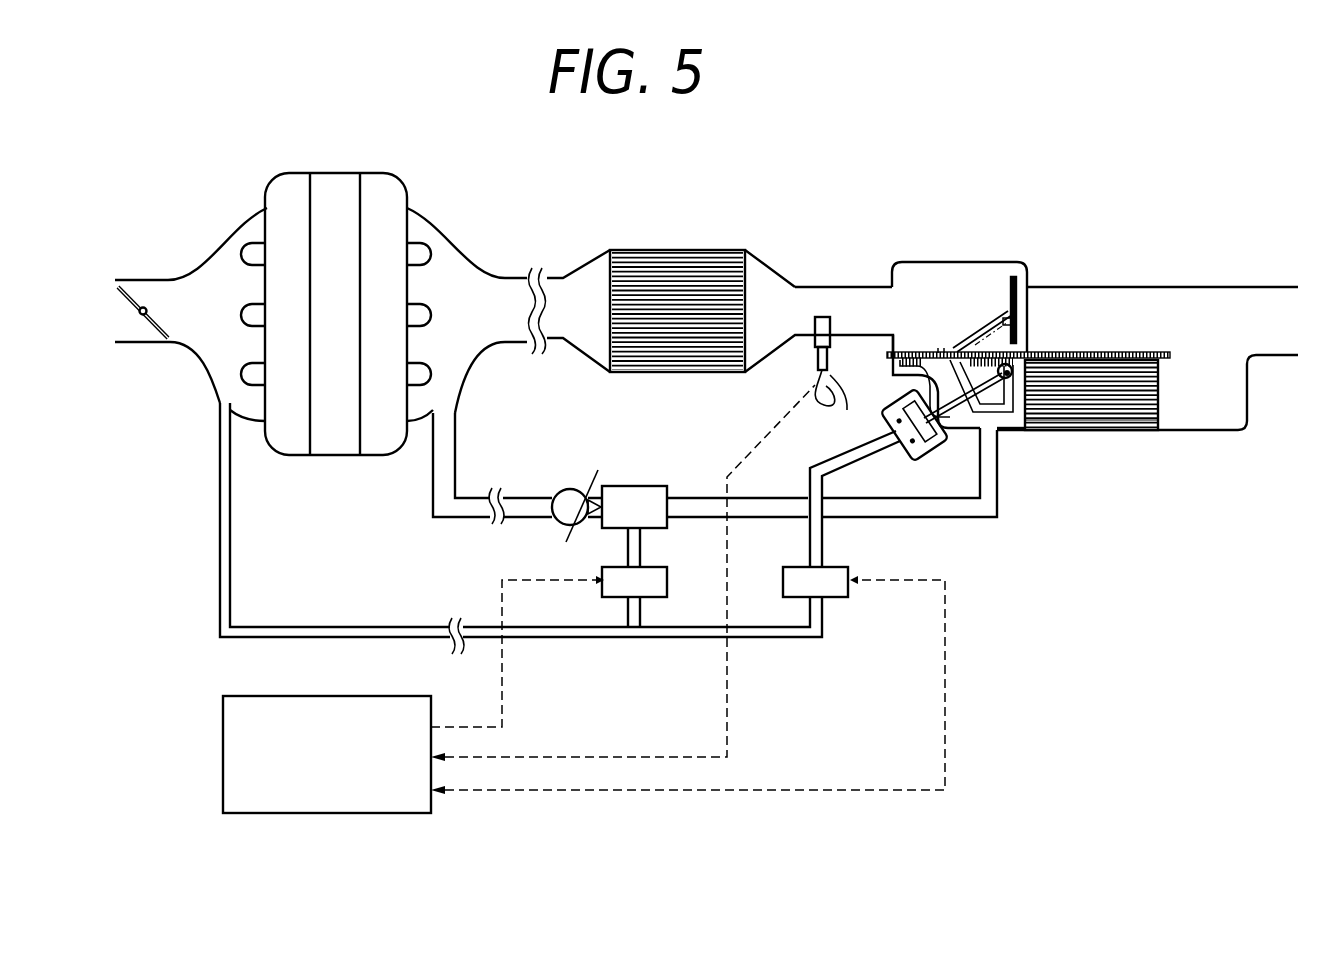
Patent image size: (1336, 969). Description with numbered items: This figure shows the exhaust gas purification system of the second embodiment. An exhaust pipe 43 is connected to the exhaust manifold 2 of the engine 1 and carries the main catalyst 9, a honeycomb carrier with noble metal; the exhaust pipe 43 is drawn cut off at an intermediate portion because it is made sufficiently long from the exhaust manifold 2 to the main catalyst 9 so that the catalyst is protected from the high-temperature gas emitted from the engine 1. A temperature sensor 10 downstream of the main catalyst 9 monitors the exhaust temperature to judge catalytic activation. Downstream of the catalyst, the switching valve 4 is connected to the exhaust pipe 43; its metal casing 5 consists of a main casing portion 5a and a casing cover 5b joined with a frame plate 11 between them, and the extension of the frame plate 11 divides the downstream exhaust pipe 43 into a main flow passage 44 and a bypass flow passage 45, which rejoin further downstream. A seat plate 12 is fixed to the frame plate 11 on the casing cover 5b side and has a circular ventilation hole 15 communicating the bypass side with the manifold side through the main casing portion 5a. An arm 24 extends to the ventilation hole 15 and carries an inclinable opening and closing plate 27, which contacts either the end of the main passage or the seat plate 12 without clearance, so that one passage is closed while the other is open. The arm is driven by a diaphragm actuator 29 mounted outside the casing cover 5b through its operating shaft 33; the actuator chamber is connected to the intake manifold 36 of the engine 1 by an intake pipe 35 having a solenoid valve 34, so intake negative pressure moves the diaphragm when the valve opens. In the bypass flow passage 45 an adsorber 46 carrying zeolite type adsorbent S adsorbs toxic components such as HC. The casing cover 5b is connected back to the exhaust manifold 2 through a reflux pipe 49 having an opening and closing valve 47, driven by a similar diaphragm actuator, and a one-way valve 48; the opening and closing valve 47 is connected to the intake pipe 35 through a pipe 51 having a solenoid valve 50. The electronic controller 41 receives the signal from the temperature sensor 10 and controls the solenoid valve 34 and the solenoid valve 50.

The engine 1 is at (345, 172).
The exhaust manifold 2 is at (478, 236).
The switching valve 4 is at (1033, 258).
The casing 5 is at (993, 254).
The main casing portion 5a is at (915, 260).
The casing cover 5b is at (959, 420).
The main catalyst 9 is at (710, 262).
The temperature sensor 10 is at (812, 325).
The frame plate 11 is at (1050, 352).
The seat plate 12 is at (895, 378).
The ventilation hole 15 is at (890, 352).
The arm 24 is at (985, 330).
The opening and closing plate 27 is at (1003, 296).
The diaphragm actuator 29 is at (918, 478).
The operating shaft 33 is at (1000, 458).
The solenoid valve 34 is at (850, 600).
The intake pipe 35 is at (690, 640).
The intake manifold 36 is at (215, 223).
The electronic controller 41 is at (330, 815).
The exhaust pipe 43 is at (849, 255).
The main flow passage 44 is at (1125, 305).
The bypass flow passage 45 is at (1167, 412).
The adsorber 46 is at (1057, 423).
The opening and closing valve 47 is at (652, 486).
The one-way valve 48 is at (582, 485).
The reflux pipe 49 is at (763, 519).
The solenoid valve 50 is at (668, 583).
The pipe 51 is at (643, 548).
The adsorbent S is at (1110, 428).